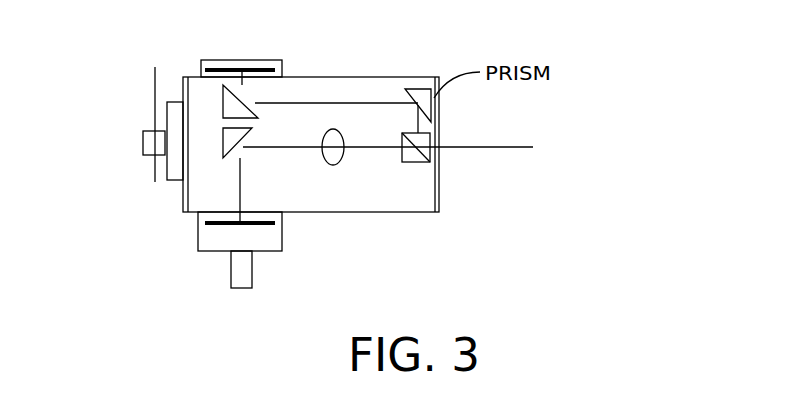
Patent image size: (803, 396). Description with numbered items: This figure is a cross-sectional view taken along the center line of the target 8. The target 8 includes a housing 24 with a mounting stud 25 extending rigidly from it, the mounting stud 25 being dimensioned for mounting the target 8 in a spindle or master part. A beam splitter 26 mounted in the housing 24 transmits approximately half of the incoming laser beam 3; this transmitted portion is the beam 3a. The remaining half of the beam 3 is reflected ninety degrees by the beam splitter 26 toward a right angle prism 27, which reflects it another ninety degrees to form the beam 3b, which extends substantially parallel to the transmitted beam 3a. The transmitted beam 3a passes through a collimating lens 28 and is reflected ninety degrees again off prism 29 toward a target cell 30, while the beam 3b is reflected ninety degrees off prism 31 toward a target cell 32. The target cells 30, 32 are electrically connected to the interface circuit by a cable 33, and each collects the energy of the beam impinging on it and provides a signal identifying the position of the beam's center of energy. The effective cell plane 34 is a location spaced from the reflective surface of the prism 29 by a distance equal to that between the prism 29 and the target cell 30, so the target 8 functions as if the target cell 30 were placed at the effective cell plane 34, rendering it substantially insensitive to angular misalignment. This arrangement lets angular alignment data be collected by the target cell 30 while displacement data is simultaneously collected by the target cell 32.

The laser beam 3 is at (488, 148).
The transmitted beam 3a is at (381, 148).
The reflected beam 3b is at (317, 103).
The target 8 is at (545, 45).
The housing 24 is at (355, 213).
The mounting stud 25 is at (143, 140).
The beam splitter 26 is at (418, 164).
The right angle prism 27 is at (418, 88).
The collimating lens 28 is at (327, 166).
The prism 29 is at (170, 181).
The target cell 30 is at (213, 225).
The prism 31 is at (222, 107).
The target cell 32 is at (215, 68).
The cable 33 is at (245, 288).
The effective cell plane 34 is at (153, 108).